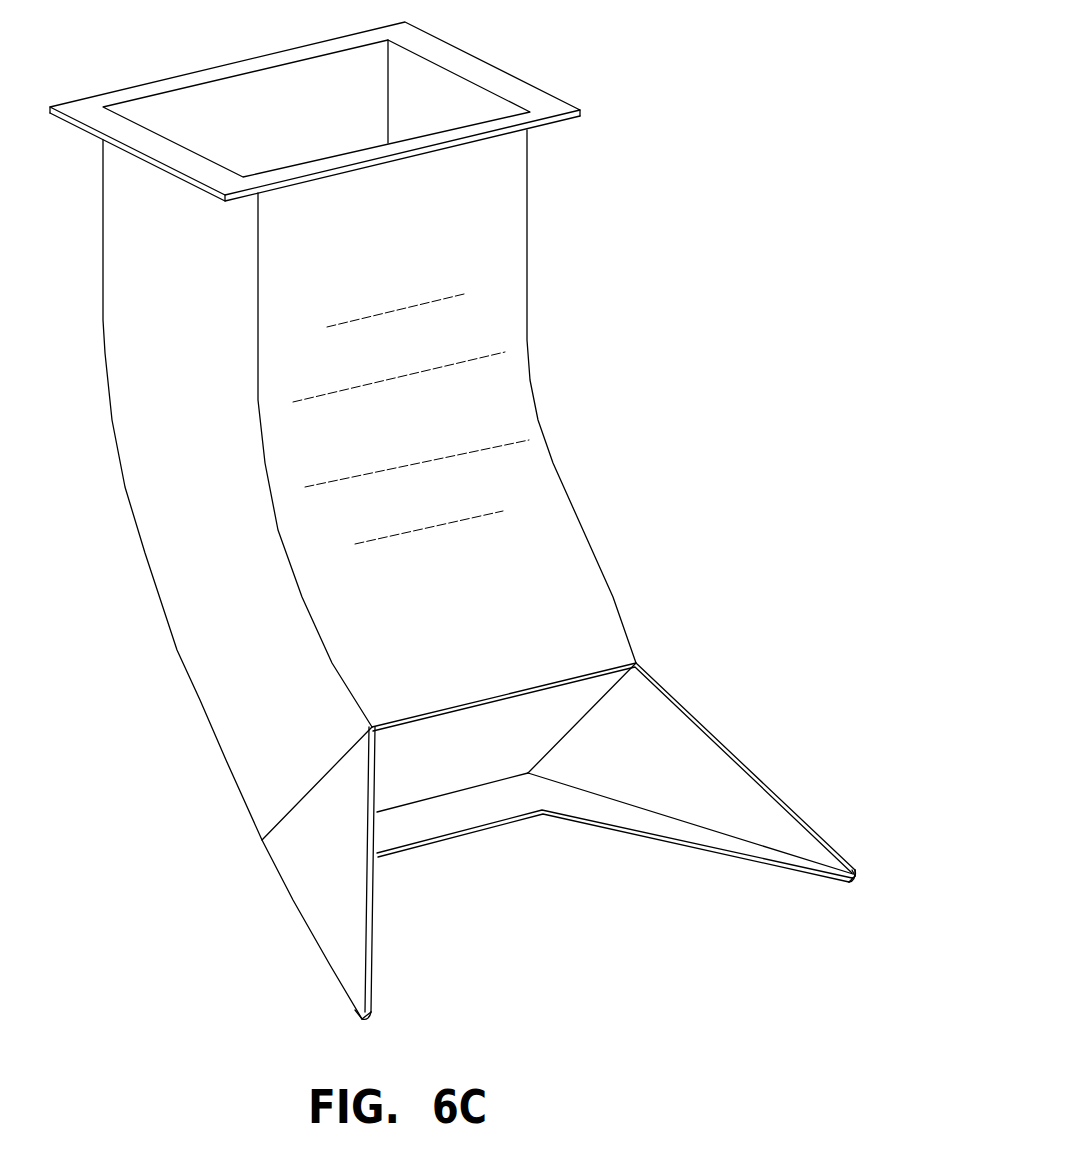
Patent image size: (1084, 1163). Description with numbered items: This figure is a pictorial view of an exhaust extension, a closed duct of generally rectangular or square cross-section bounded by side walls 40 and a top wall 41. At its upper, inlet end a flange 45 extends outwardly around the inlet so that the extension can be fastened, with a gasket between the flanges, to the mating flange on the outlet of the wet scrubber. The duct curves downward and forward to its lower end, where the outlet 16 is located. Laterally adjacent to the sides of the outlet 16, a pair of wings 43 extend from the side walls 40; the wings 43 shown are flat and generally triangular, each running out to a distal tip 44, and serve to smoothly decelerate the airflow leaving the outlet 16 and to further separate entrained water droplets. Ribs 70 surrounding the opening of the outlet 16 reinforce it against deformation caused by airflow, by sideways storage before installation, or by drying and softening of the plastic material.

The outlet 16 is at (500, 519).
The side walls 40 is at (184, 452).
The top wall 41 is at (513, 413).
The wings 43 is at (327, 900).
The tip 44 is at (343, 1015).
The flange 45 is at (493, 77).
The ribs 70 is at (452, 837).